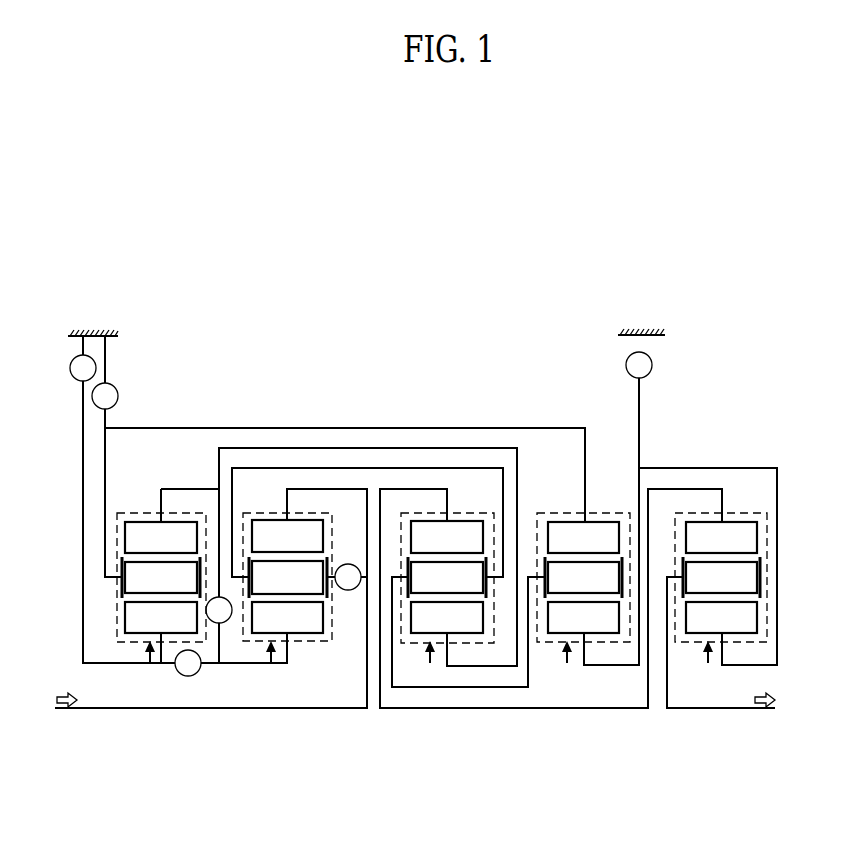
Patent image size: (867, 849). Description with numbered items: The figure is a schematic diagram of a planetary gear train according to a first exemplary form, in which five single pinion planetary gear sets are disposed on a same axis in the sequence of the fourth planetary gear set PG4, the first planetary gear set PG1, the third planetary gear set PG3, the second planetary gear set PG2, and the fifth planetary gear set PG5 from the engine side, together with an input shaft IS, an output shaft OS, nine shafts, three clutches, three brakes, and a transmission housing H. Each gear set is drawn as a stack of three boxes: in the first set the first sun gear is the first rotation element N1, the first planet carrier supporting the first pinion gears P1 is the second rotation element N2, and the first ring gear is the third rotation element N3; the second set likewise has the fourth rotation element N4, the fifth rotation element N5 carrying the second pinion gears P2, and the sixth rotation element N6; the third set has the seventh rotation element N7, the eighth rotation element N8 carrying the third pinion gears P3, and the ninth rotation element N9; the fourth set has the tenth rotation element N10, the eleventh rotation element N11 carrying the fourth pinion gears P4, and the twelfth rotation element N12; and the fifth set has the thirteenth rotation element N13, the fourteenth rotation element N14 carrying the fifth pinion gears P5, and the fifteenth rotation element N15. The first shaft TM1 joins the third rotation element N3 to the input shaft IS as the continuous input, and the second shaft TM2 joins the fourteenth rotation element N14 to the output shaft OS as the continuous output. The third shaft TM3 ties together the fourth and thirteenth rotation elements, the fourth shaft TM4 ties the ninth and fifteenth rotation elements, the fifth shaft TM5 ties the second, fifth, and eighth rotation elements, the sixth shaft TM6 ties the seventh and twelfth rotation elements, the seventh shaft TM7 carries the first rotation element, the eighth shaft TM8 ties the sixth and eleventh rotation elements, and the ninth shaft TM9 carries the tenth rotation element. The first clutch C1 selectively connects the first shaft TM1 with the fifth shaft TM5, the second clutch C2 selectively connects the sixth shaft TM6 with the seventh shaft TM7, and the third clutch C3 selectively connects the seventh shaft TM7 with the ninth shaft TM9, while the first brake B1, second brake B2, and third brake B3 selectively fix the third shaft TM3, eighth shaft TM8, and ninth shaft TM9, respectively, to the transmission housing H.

The transmission housing H is at (95, 333).
The first brake B1 is at (639, 365).
The second brake B2 is at (105, 396).
The third brake B3 is at (83, 368).
The first clutch C1 is at (347, 577).
The second clutch C2 is at (196, 556).
The third clutch C3 is at (188, 663).
The input shaft IS is at (64, 710).
The output shaft OS is at (761, 710).
The first shaft TM1 is at (367, 703).
The second shaft TM2 is at (665, 688).
The third shaft TM3 is at (740, 468).
The fourth shaft TM4 is at (466, 708).
The fifth shaft TM5 is at (270, 468).
The sixth shaft TM6 is at (467, 448).
The seventh shaft TM7 is at (235, 665).
The eighth shaft TM8 is at (372, 428).
The ninth shaft TM9 is at (83, 595).
The first planetary gear set PG1 is at (271, 667).
The second planetary gear set PG2 is at (567, 664).
The third planetary gear set PG3 is at (430, 664).
The fourth planetary gear set PG4 is at (150, 665).
The fifth planetary gear set PG5 is at (708, 664).
The first pinion gears P1 is at (287, 577).
The second pinion gears P2 is at (583, 577).
The third pinion gears P3 is at (447, 577).
The fourth pinion gears P4 is at (161, 577).
The fifth pinion gears P5 is at (721, 577).
The first rotation element N1 is at (287, 617).
The second rotation element N2 is at (331, 598).
The third rotation element N3 is at (287, 536).
The fourth rotation element N4 is at (583, 617).
The fifth rotation element N5 is at (545, 566).
The sixth rotation element N6 is at (583, 537).
The seventh rotation element N7 is at (447, 617).
The eighth rotation element N8 is at (487, 594).
The ninth rotation element N9 is at (447, 537).
The tenth rotation element N10 is at (161, 617).
The eleventh rotation element N11 is at (122, 600).
The twelfth rotation element N12 is at (161, 537).
The thirteenth rotation element N13 is at (721, 617).
The fourteenth rotation element N14 is at (683, 566).
The fifteenth rotation element N15 is at (721, 537).